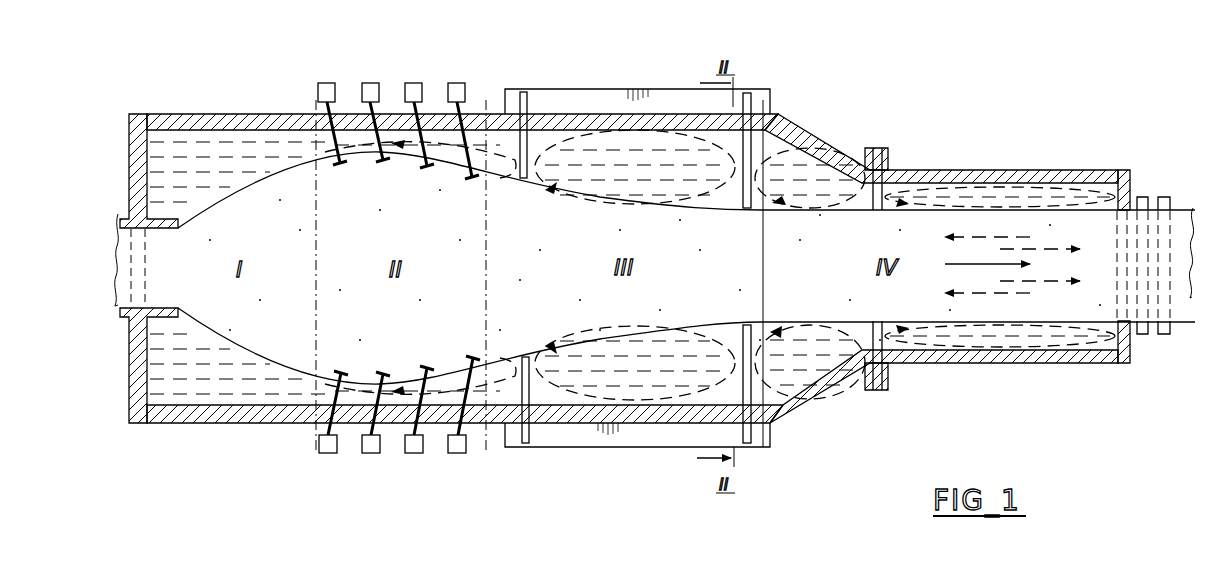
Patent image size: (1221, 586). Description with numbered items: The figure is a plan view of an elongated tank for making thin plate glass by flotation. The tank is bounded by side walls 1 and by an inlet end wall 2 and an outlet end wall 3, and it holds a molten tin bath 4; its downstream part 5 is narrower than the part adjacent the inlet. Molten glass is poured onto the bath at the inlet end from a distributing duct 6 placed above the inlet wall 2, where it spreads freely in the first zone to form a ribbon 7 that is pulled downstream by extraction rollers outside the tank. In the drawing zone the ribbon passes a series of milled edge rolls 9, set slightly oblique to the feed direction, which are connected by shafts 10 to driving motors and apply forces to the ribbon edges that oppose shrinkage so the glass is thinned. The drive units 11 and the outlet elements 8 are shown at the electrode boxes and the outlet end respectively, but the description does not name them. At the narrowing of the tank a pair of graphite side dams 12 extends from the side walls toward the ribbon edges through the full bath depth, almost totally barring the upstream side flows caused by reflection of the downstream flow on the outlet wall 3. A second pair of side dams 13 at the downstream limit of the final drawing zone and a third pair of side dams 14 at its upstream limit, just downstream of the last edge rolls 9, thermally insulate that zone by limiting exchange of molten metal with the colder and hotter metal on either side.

The side walls 1 is at (228, 113).
The inlet end wall 2 is at (129, 172).
The outlet end wall 3 is at (1131, 190).
The molten tin bath 4 is at (192, 407).
The downstream part 5 is at (1010, 170).
The distributing duct 6 is at (120, 320).
The ribbon 7 is at (1048, 330).
The outlet electrodes 8 is at (1165, 335).
The edge rolls 9 is at (383, 161).
The shafts 10 is at (456, 83).
The electrodes 11 is at (370, 83).
The side dams 12 is at (889, 160).
The second pair of side dams 13 is at (752, 100).
The third pair of side dams 14 is at (528, 140).